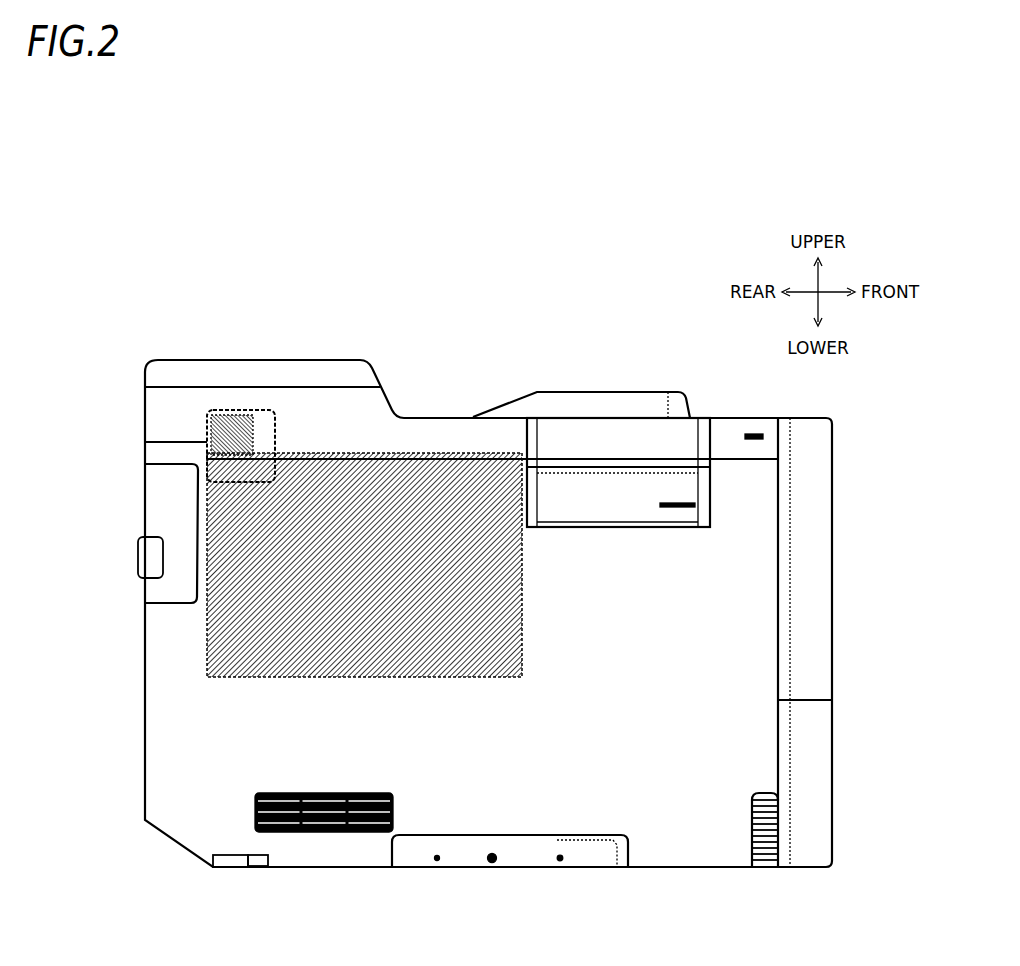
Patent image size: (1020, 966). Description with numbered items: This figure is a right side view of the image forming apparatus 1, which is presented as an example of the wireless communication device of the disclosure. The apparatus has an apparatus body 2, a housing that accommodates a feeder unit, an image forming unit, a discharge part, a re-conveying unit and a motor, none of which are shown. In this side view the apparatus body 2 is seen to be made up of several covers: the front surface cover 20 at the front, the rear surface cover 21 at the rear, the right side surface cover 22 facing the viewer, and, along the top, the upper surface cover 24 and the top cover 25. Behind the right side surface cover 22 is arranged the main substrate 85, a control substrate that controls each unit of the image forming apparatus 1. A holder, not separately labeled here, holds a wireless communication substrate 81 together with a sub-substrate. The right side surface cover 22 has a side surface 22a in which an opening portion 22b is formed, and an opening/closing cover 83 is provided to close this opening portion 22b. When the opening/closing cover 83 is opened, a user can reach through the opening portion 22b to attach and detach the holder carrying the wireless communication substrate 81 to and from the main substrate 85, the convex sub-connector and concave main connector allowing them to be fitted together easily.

The image forming apparatus 1 is at (686, 310).
The apparatus body 2 is at (331, 871).
The front surface cover 20 is at (840, 535).
The rear surface cover 21 is at (140, 710).
The right side surface cover 22 is at (656, 805).
The side surface 22a is at (200, 800).
The opening portion 22b is at (205, 480).
The upper surface cover 24 is at (487, 440).
The top cover 25 is at (278, 357).
The wireless communication substrate 81 is at (203, 408).
The opening/closing cover 83 is at (266, 425).
The main substrate 85 is at (205, 631).